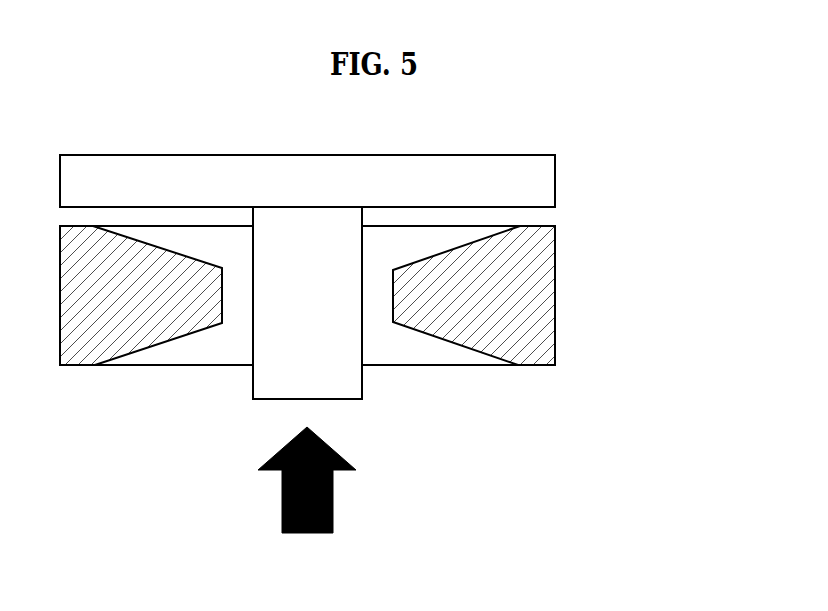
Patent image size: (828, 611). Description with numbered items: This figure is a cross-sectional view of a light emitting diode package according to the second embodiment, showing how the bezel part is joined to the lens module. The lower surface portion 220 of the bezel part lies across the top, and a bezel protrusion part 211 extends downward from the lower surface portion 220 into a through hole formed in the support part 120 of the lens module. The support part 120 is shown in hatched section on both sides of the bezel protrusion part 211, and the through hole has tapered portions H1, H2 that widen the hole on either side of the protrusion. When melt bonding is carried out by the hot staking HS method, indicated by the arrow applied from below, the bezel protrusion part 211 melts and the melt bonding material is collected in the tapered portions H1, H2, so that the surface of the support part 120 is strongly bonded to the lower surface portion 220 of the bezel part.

The lower surface portion 220 is at (540, 177).
The bezel protrusion part 211 is at (265, 379).
The support part 120 is at (540, 297).
The tapered portion H1 is at (408, 353).
The tapered portion H2 is at (207, 233).
The hot staking HS is at (307, 499).